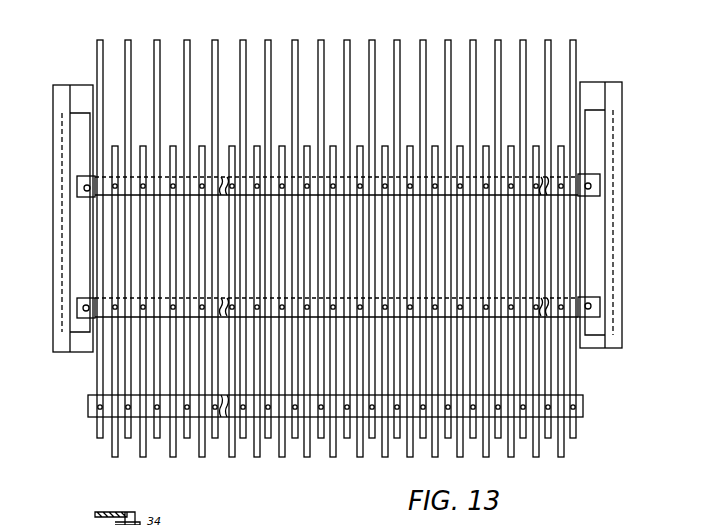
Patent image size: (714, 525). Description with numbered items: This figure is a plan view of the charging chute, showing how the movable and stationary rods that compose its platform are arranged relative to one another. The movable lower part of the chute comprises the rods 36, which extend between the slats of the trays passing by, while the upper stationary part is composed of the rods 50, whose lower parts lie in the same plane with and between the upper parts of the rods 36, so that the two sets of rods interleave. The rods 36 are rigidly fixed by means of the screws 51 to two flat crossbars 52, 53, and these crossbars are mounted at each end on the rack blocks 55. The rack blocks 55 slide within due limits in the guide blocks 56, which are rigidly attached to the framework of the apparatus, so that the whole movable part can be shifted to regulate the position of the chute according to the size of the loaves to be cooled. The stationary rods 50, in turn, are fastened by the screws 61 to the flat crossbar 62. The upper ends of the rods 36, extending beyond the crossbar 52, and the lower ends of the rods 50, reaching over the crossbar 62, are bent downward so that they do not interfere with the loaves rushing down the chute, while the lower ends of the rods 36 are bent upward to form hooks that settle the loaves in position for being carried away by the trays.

The rods 36 is at (202, 155).
The rods 50 is at (128, 54).
The screws 51 is at (143, 155).
The flat crossbar 52 is at (78, 303).
The flat crossbar 53 is at (78, 185).
The rack blocks 55 is at (77, 230).
The guide blocks 56 is at (60, 340).
The screws 61 is at (97, 407).
The flat crossbar 62 is at (90, 418).